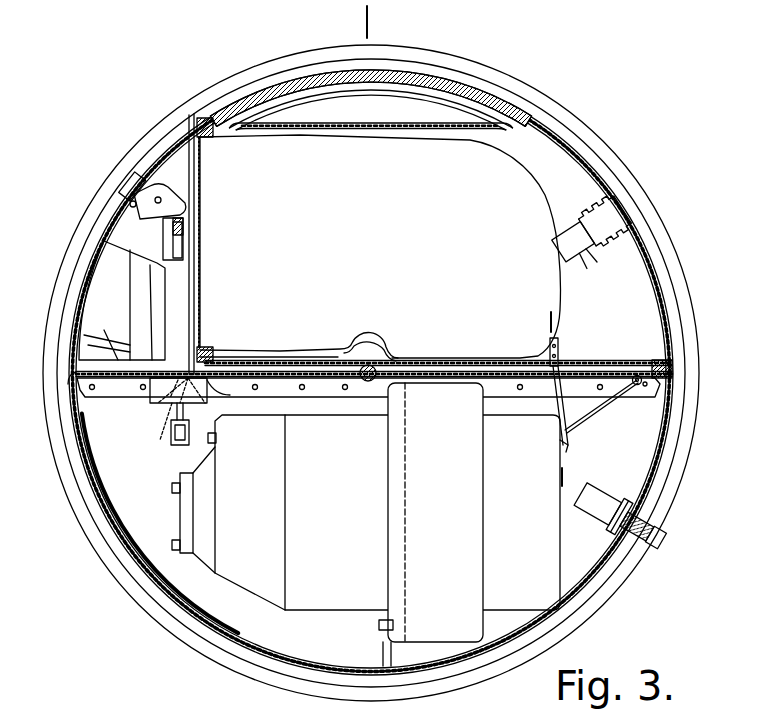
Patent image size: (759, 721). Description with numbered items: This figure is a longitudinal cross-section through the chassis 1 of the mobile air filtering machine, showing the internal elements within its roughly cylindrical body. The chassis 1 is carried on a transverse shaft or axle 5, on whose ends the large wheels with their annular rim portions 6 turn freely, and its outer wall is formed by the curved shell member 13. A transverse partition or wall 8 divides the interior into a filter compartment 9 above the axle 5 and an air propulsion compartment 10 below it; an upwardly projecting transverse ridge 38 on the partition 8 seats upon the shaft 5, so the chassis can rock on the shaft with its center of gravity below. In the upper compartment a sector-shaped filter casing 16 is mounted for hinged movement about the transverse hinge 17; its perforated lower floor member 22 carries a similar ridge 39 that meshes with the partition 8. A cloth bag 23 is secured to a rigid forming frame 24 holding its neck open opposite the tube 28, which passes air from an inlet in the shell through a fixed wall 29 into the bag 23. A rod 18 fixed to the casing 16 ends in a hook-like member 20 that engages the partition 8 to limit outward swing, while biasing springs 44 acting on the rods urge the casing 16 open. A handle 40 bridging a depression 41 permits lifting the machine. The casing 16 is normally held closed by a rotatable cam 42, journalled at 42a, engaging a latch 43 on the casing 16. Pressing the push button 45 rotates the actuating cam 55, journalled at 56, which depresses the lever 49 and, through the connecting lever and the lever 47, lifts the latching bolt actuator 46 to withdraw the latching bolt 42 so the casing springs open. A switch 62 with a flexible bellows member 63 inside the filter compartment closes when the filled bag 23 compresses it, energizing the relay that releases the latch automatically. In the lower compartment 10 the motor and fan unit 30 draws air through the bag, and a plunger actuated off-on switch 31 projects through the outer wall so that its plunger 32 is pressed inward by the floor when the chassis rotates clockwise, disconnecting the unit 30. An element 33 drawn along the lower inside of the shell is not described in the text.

The chassis 1 is at (242, 645).
The transverse shaft or axle 5 is at (360, 17).
The annular rim portions 6 is at (548, 322).
The transverse partition or wall 8 is at (117, 383).
The filter compartment 9 is at (561, 184).
The air propulsion compartment 10 is at (259, 626).
The curved shell member 13 is at (548, 128).
The filter casing 16 is at (214, 114).
The hinge 17 is at (674, 368).
The rod 18 is at (580, 415).
The hook-like member 20 is at (568, 447).
The lower floor member 22 is at (585, 362).
The cloth bag 23 is at (512, 178).
The rigid forming frame 24 is at (200, 170).
The tube 28 is at (108, 292).
The fixed wall 29 is at (190, 243).
The motor and fan unit 30 is at (366, 524).
The plunger actuated off-on switch 31 is at (610, 512).
The actuating plunger 32 is at (668, 546).
The ballast keel 33 is at (95, 495).
The transverse ridge 38 is at (378, 362).
The ridge 39 is at (367, 346).
The handle 40 is at (437, 75).
The depression 41 is at (476, 112).
The rotatable cam 42 is at (150, 400).
The journal 42a is at (224, 396).
The latch 43 is at (186, 410).
The biasing springs 44 is at (637, 386).
The push button 45 is at (122, 172).
The latching bolt actuator 46 is at (176, 410).
The lever 47 is at (178, 447).
The lever 49 is at (185, 222).
The actuating cam 55 is at (162, 214).
The journal 56 is at (129, 210).
The switch 62 is at (594, 262).
The bellows member 63 is at (620, 265).